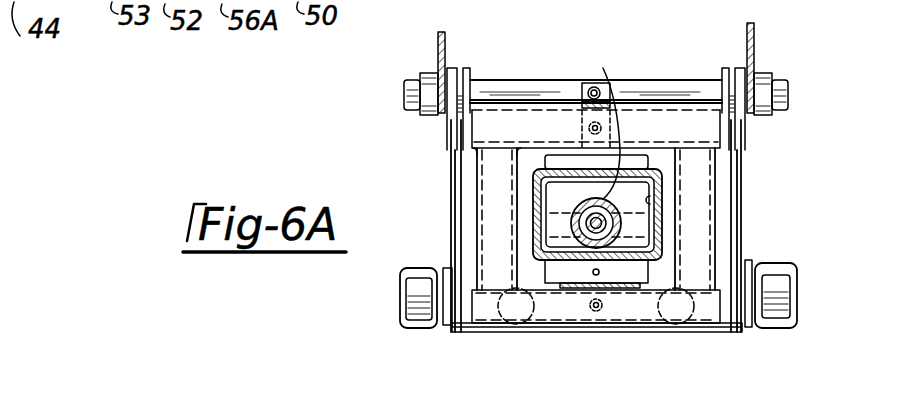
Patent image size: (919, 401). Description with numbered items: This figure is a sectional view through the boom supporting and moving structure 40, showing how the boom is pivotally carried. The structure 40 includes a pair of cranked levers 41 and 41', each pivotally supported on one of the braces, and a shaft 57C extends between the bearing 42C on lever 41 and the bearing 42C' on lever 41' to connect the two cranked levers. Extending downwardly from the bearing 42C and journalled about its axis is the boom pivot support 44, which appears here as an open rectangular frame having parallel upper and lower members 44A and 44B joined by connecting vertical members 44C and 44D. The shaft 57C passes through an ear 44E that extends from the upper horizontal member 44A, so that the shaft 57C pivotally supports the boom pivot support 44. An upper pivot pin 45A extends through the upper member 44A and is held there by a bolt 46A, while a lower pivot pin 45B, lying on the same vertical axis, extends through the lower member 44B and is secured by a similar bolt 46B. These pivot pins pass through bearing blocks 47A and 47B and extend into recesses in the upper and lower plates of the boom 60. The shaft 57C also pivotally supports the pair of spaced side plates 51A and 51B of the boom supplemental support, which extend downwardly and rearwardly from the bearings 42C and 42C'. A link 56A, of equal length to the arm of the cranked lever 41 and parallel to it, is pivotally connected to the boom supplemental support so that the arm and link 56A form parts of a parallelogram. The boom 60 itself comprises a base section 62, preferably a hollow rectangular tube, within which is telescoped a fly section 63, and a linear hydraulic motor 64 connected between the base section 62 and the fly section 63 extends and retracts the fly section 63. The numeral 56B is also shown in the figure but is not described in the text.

The boom supporting and moving structure 40 is at (910, 236).
The cranked lever 41 is at (786, 57).
The cranked lever 41' is at (414, 56).
The bearing 42C is at (807, 75).
The bearing 42C' is at (384, 107).
The boom pivot support 44 is at (722, 197).
The upper member 44A is at (655, 120).
The lower member 44B is at (665, 320).
The vertical member 44C is at (481, 224).
The vertical member 44D is at (705, 232).
The ear 44E is at (463, 68).
The upper pivot pin 45A is at (580, 100).
The lower pivot pin 45B is at (540, 322).
The bolt 46A is at (588, 130).
The bolt 46B is at (604, 304).
The bearing block 47A is at (545, 160).
The bearing block 47B is at (545, 274).
The side plate 51A is at (746, 243).
The side plate 51B is at (455, 196).
The link 56A is at (778, 331).
The nut 56B is at (402, 318).
The shaft 57C is at (640, 86).
The boom 60 is at (666, 183).
The base section 62 is at (718, 190).
The fly section 63 is at (653, 202).
The linear hydraulic motor 64 is at (610, 121).